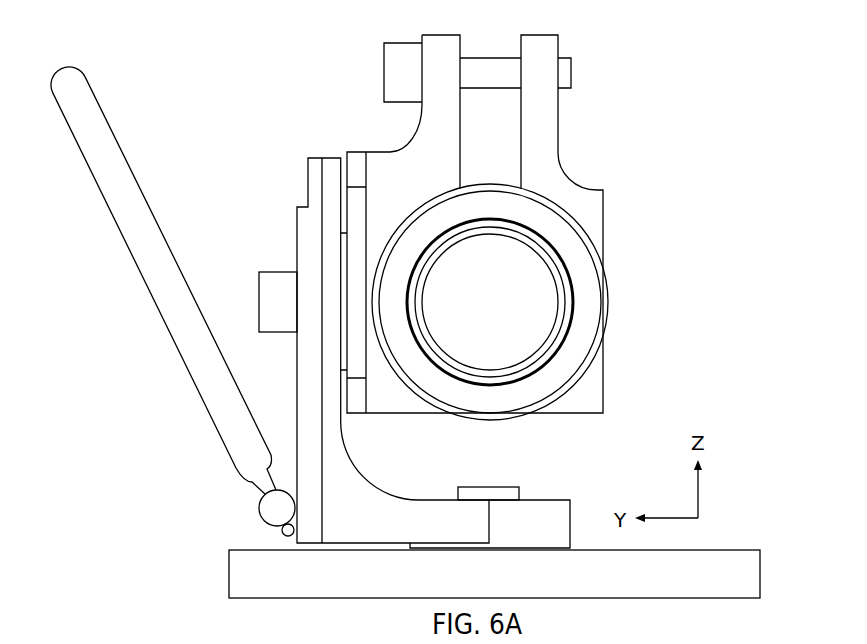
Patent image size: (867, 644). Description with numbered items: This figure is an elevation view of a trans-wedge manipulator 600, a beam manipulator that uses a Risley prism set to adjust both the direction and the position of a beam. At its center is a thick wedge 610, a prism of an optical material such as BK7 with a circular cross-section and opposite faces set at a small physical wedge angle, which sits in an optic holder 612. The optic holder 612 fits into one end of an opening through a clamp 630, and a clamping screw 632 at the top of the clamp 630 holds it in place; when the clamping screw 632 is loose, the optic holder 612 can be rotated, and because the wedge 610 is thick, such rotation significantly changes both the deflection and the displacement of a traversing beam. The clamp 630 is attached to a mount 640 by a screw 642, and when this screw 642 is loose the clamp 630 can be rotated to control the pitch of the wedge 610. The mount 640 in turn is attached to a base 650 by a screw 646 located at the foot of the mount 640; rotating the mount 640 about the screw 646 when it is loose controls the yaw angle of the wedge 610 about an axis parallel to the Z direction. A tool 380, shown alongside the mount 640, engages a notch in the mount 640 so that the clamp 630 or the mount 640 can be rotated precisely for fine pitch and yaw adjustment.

The tool 380 is at (147, 203).
The trans-wedge manipulator 600 is at (640, 44).
The thick wedge 610 is at (510, 312).
The optic holder 612 is at (607, 302).
The clamp 630 is at (603, 397).
The clamping screw 632 is at (383, 83).
The mount 640 is at (297, 240).
The screw 642 is at (259, 312).
The screw 646 is at (502, 487).
The base 650 is at (263, 550).